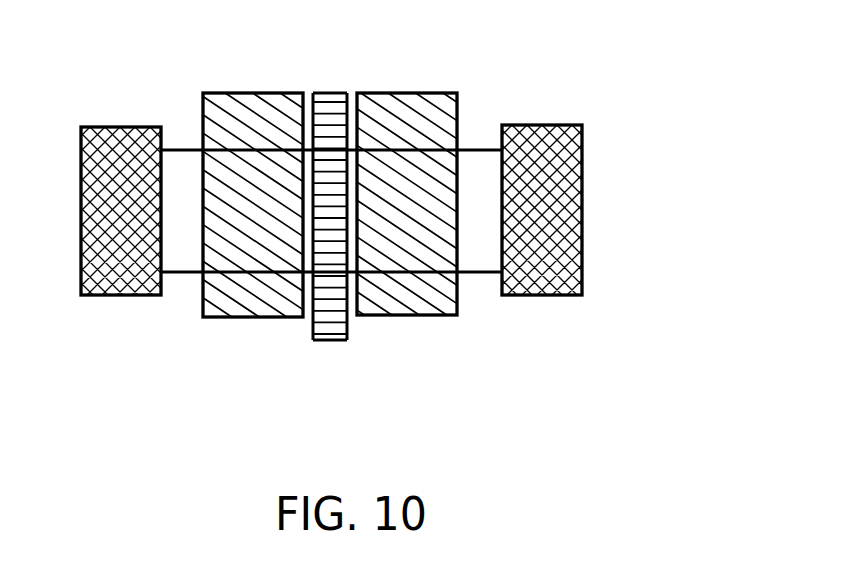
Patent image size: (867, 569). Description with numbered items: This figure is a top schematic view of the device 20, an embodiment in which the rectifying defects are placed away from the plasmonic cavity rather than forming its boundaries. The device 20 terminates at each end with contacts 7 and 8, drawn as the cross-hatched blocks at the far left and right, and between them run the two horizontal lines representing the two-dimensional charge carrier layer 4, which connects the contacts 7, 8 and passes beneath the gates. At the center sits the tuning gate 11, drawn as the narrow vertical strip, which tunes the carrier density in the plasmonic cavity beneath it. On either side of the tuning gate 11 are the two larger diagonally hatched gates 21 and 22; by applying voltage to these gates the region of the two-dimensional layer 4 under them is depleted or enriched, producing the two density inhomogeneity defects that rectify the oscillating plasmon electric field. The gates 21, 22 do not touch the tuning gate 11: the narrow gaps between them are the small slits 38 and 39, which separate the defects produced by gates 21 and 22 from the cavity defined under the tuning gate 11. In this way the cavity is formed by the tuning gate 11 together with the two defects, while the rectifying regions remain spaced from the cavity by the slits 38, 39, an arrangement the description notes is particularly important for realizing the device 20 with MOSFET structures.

The two-dimensional charge carrier layer 4 is at (192, 262).
The contact 7 is at (118, 130).
The contact 8 is at (533, 140).
The top gate 11 is at (331, 330).
The device 20 is at (635, 115).
The gate 21 is at (213, 187).
The gate 22 is at (446, 175).
The slit 38 is at (307, 92).
The slit 39 is at (353, 92).